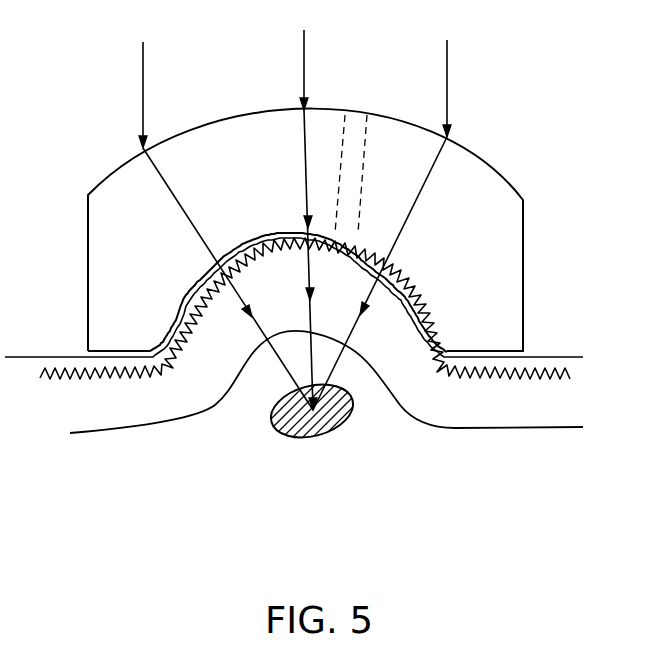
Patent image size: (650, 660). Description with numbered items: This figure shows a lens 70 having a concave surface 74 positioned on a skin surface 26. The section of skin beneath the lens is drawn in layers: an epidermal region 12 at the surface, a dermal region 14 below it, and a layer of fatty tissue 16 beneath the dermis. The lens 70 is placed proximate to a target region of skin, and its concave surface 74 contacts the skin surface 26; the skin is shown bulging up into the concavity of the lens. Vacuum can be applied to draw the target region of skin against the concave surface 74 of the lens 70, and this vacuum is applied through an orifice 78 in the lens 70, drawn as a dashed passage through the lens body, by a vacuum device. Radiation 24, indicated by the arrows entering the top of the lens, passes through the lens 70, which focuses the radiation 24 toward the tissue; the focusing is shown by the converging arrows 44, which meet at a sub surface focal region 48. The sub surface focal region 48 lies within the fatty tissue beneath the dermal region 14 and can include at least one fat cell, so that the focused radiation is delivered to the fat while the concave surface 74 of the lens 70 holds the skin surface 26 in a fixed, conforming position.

The epidermal region 12 is at (558, 369).
The dermal region 14 is at (558, 407).
The layer of fatty tissue 16 is at (376, 404).
The radiation 24 is at (449, 72).
The skin surface 26 is at (38, 356).
The arrows 44 is at (240, 300).
The sub surface focal region 48 is at (275, 423).
The lens 70 is at (523, 249).
The concave surface 74 is at (262, 232).
The orifice 78 is at (354, 132).